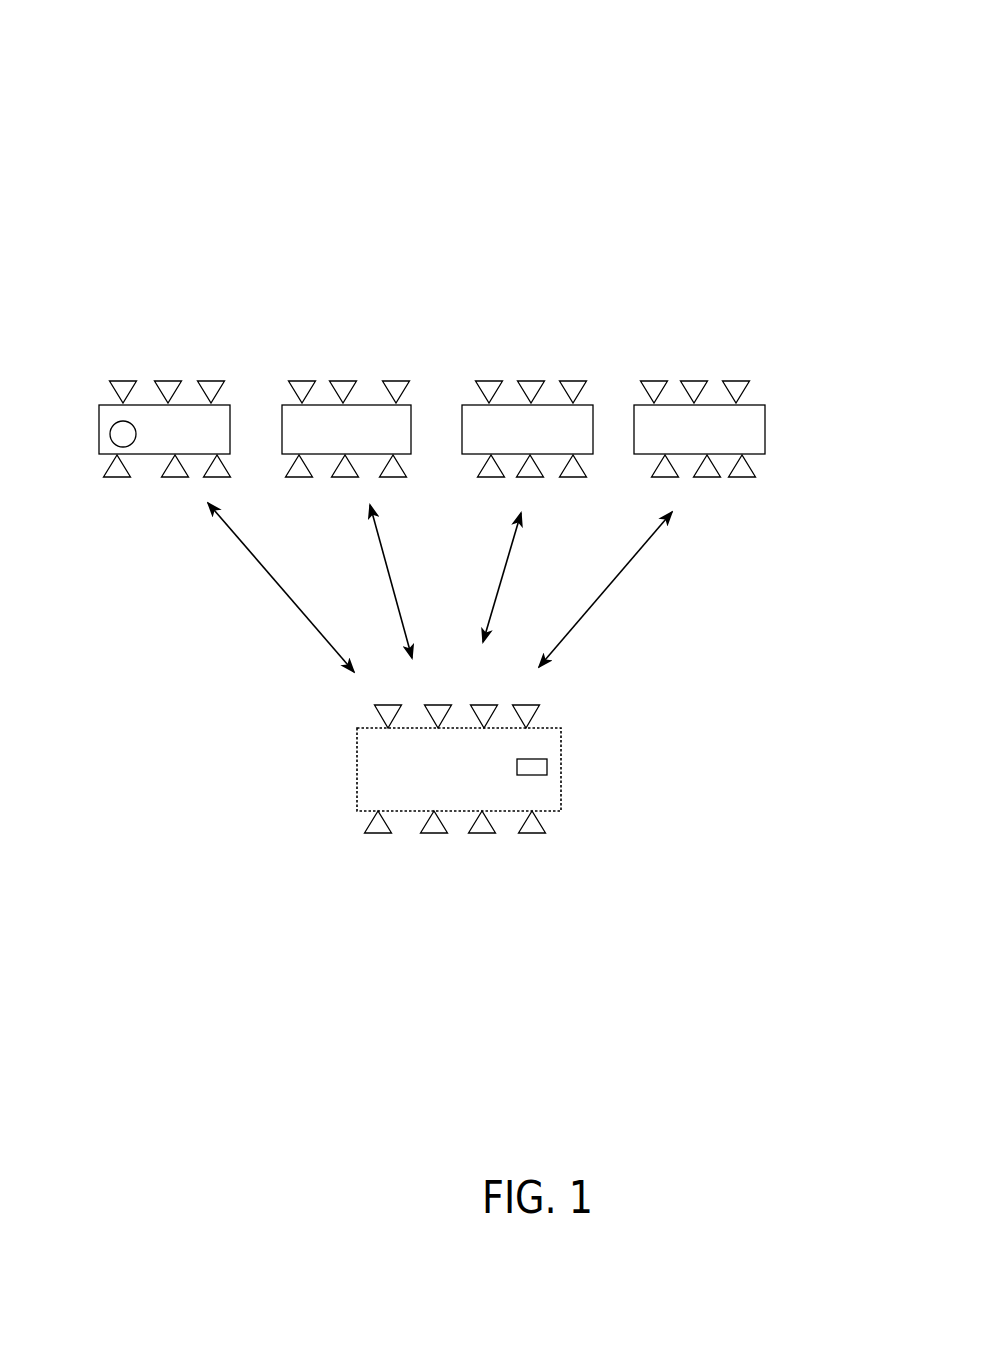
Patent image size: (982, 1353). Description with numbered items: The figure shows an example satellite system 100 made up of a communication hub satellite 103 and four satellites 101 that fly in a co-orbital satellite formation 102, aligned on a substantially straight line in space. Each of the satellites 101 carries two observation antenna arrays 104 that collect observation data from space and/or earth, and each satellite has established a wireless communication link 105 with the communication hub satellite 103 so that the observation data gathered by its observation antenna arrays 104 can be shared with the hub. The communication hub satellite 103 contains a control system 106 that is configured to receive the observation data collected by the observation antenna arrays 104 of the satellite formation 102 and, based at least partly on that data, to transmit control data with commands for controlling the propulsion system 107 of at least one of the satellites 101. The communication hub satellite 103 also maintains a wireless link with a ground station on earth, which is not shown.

The satellite system 100 is at (410, 157).
The satellites 101 is at (232, 405).
The satellite formation 102 is at (220, 590).
The communication hub satellite 103 is at (545, 812).
The observation antenna arrays 104 is at (697, 383).
The wireless communication link 105 is at (612, 586).
The control system 106 is at (547, 768).
The propulsion system 107 is at (112, 418).